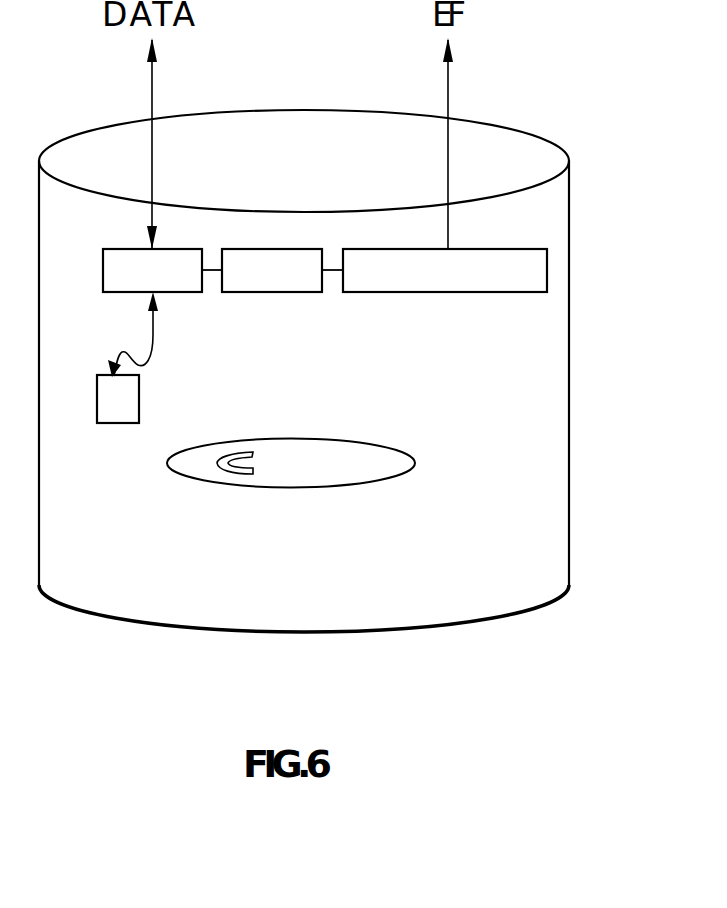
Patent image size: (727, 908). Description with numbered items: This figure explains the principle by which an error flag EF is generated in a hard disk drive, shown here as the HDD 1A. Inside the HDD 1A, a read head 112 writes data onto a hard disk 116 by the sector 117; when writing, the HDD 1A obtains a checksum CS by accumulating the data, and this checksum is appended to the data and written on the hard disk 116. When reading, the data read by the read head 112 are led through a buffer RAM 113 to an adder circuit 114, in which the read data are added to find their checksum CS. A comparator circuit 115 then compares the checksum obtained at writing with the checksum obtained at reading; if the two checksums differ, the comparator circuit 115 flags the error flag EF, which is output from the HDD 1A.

The HDD 1A is at (570, 467).
The read head 112 is at (117, 424).
The buffer RAM 113 is at (180, 293).
The adder circuit 114 is at (308, 293).
The comparator circuit 115 is at (507, 293).
The hard disk 116 is at (393, 437).
The sector 117 is at (238, 474).